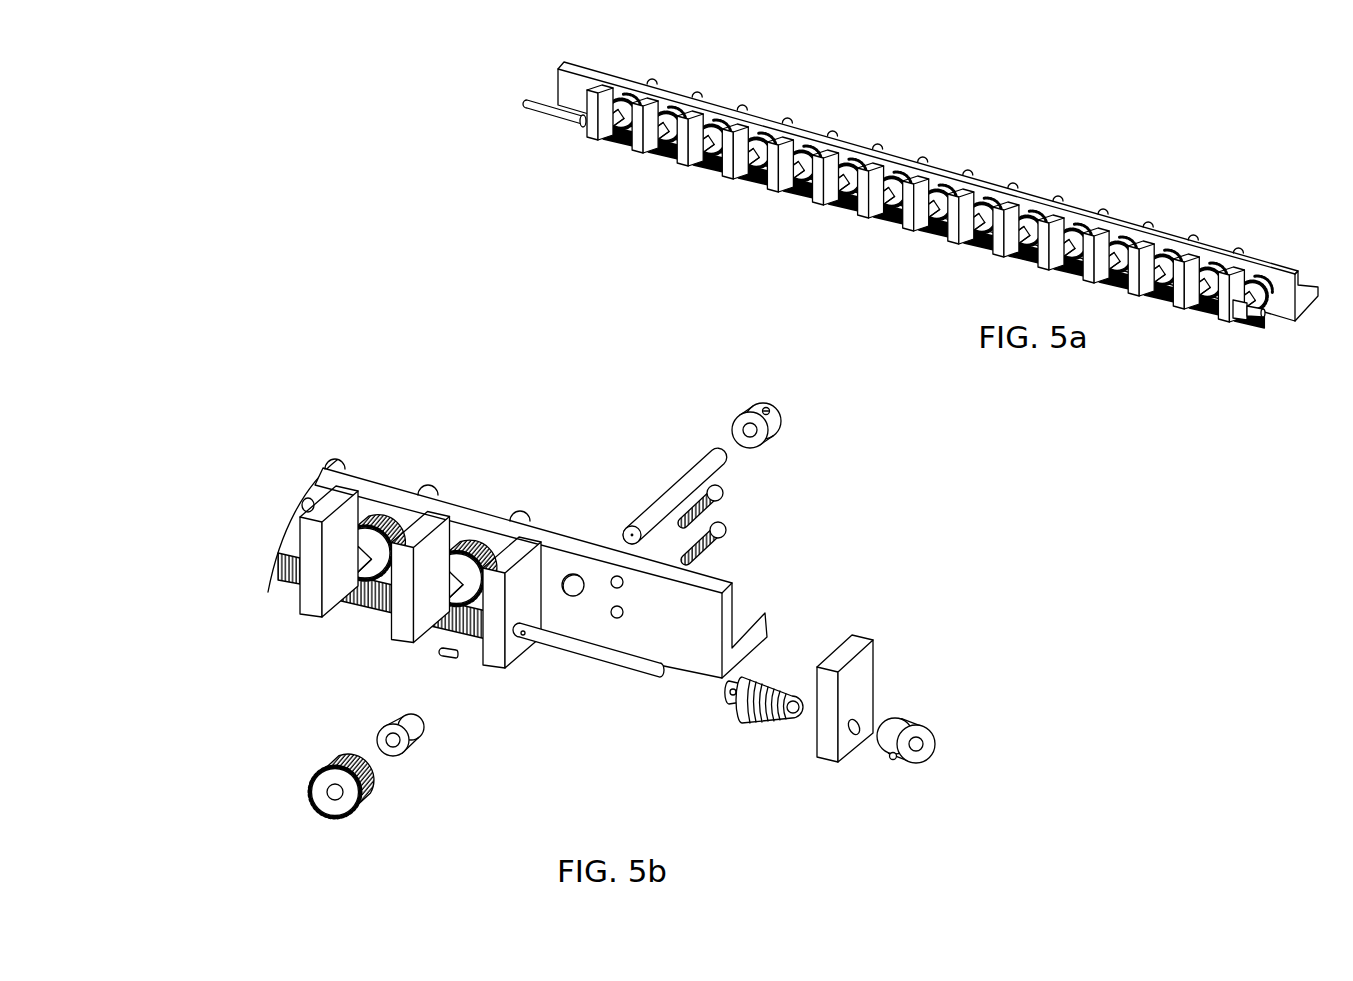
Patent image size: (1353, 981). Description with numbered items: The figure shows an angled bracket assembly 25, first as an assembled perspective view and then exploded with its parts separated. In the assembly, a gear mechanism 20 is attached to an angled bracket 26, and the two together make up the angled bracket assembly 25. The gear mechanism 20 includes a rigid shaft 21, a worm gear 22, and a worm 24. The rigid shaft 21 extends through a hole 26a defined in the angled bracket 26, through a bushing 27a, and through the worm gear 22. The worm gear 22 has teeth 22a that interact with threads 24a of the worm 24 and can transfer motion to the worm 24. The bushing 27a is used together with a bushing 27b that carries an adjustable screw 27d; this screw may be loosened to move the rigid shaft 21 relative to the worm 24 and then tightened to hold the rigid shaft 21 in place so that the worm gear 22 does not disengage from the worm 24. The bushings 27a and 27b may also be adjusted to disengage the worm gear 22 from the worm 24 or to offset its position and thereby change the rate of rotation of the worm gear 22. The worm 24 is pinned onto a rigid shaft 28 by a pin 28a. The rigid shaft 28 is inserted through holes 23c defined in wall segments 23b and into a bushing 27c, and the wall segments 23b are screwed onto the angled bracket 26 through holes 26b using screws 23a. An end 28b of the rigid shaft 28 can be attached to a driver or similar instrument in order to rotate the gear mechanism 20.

In FIG. 5A, the gear mechanism 20 is at (603, 138).
In FIG. 5B, the rigid shaft 21 is at (678, 482).
In FIG. 5B, the worm gear 22 is at (340, 805).
In FIG. 5B, the teeth 22a is at (367, 807).
In FIG. 5B, the screws 23a is at (727, 502).
In FIG. 5B, the wall segments 23b is at (888, 740).
In FIG. 5B, the holes 23c is at (857, 735).
In FIG. 5B, the worm 24 is at (739, 743).
In FIG. 5B, the threads 24a is at (750, 717).
In FIG. 5A, the angled bracket assembly 25 is at (895, 225).
In FIG. 5A, the angled bracket 26 is at (1302, 313).
In FIG. 5B, the angled bracket 26 is at (541, 581).
In FIG. 5B, the hole 26a is at (571, 577).
In FIG. 5B, the holes 26b is at (622, 587).
In FIG. 5B, the bushing 27a is at (385, 725).
In FIG. 5B, the bushing 27b is at (801, 396).
In FIG. 5B, the bushing 27c is at (920, 760).
In FIG. 5B, the adjustable screw 27d is at (764, 407).
In FIG. 5B, the rigid shaft 28 is at (571, 655).
In FIG. 5B, the pin 28a is at (457, 658).
In FIG. 5A, the end 28b is at (537, 112).